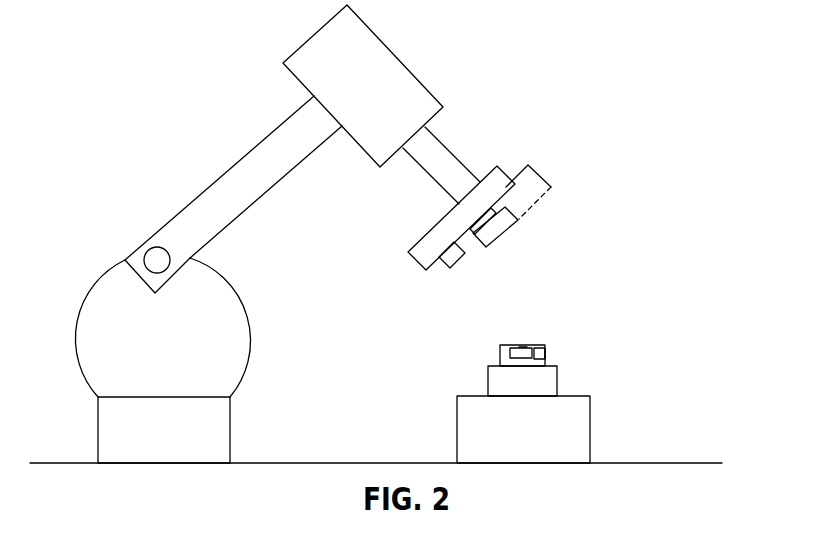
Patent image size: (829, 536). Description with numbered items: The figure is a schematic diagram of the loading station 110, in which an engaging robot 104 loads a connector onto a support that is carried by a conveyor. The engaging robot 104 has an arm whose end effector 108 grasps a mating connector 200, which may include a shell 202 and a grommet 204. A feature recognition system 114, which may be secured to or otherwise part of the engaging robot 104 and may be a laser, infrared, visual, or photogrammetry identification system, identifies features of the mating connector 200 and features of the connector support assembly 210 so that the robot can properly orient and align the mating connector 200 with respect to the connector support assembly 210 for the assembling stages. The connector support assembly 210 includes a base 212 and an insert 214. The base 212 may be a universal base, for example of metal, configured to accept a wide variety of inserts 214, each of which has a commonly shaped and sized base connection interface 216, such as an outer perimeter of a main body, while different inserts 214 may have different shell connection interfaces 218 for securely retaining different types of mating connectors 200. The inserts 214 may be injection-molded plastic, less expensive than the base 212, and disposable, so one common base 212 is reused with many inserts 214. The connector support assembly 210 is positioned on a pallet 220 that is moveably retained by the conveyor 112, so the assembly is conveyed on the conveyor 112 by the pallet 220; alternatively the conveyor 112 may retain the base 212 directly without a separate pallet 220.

The engaging robot 104 is at (296, 49).
The end effector 108 is at (452, 152).
The loading station 110 is at (500, 168).
The conveyor 112 is at (590, 432).
The feature recognition system 114 is at (436, 262).
The mating connector 200 is at (551, 168).
The shell 202 is at (507, 230).
The grommet 204 is at (471, 229).
The connector support assembly 210 is at (547, 353).
The base 212 is at (499, 349).
The insert 214 is at (523, 347).
The base connection interface 216 is at (547, 359).
The shell connection interface 218 is at (525, 346).
The pallet 220 is at (488, 382).